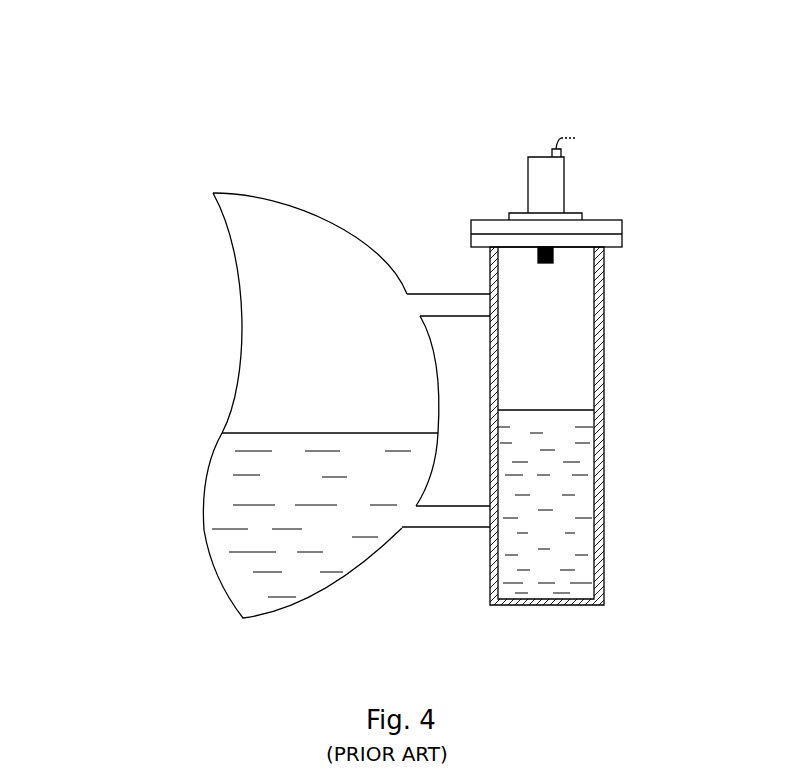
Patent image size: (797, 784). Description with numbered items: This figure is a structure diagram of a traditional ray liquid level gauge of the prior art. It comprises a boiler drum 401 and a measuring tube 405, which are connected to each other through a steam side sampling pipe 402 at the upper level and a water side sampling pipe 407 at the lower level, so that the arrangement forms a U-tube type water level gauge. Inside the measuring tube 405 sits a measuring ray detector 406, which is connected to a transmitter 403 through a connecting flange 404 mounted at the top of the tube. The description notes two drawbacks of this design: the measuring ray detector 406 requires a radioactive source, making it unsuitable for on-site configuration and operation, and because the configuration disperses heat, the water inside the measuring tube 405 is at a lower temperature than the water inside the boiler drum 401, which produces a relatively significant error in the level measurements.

The boiler drum 401 is at (238, 288).
The steam side sampling pipe 402 is at (410, 214).
The transmitter 403 is at (547, 152).
The connecting flange 404 is at (622, 222).
The measuring tube 405 is at (604, 278).
The measuring ray detector 406 is at (640, 328).
The water side sampling pipe 407 is at (415, 585).